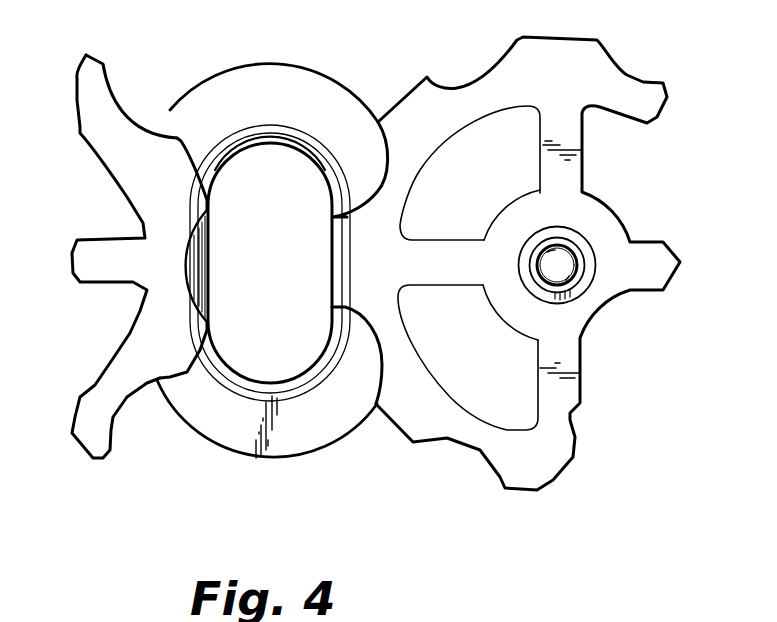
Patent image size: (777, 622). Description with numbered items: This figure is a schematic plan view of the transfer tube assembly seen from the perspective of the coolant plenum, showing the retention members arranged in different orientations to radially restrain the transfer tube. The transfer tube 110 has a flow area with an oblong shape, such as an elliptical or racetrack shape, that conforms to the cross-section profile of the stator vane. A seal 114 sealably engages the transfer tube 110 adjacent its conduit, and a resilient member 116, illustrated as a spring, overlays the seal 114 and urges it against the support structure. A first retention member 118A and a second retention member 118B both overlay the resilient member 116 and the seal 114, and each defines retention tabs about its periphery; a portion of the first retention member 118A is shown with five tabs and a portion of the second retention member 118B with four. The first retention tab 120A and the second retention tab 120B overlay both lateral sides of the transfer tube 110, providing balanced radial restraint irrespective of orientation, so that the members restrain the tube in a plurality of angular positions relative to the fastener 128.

The transfer tube 110 is at (318, 156).
The seal 114 is at (275, 125).
The resilient member 116 is at (225, 88).
The first retention member 118A is at (565, 133).
The second retention member 118B is at (95, 265).
The first retention tab 120A is at (356, 270).
The second retention tab 120B is at (176, 185).
The fastener 128 is at (560, 263).